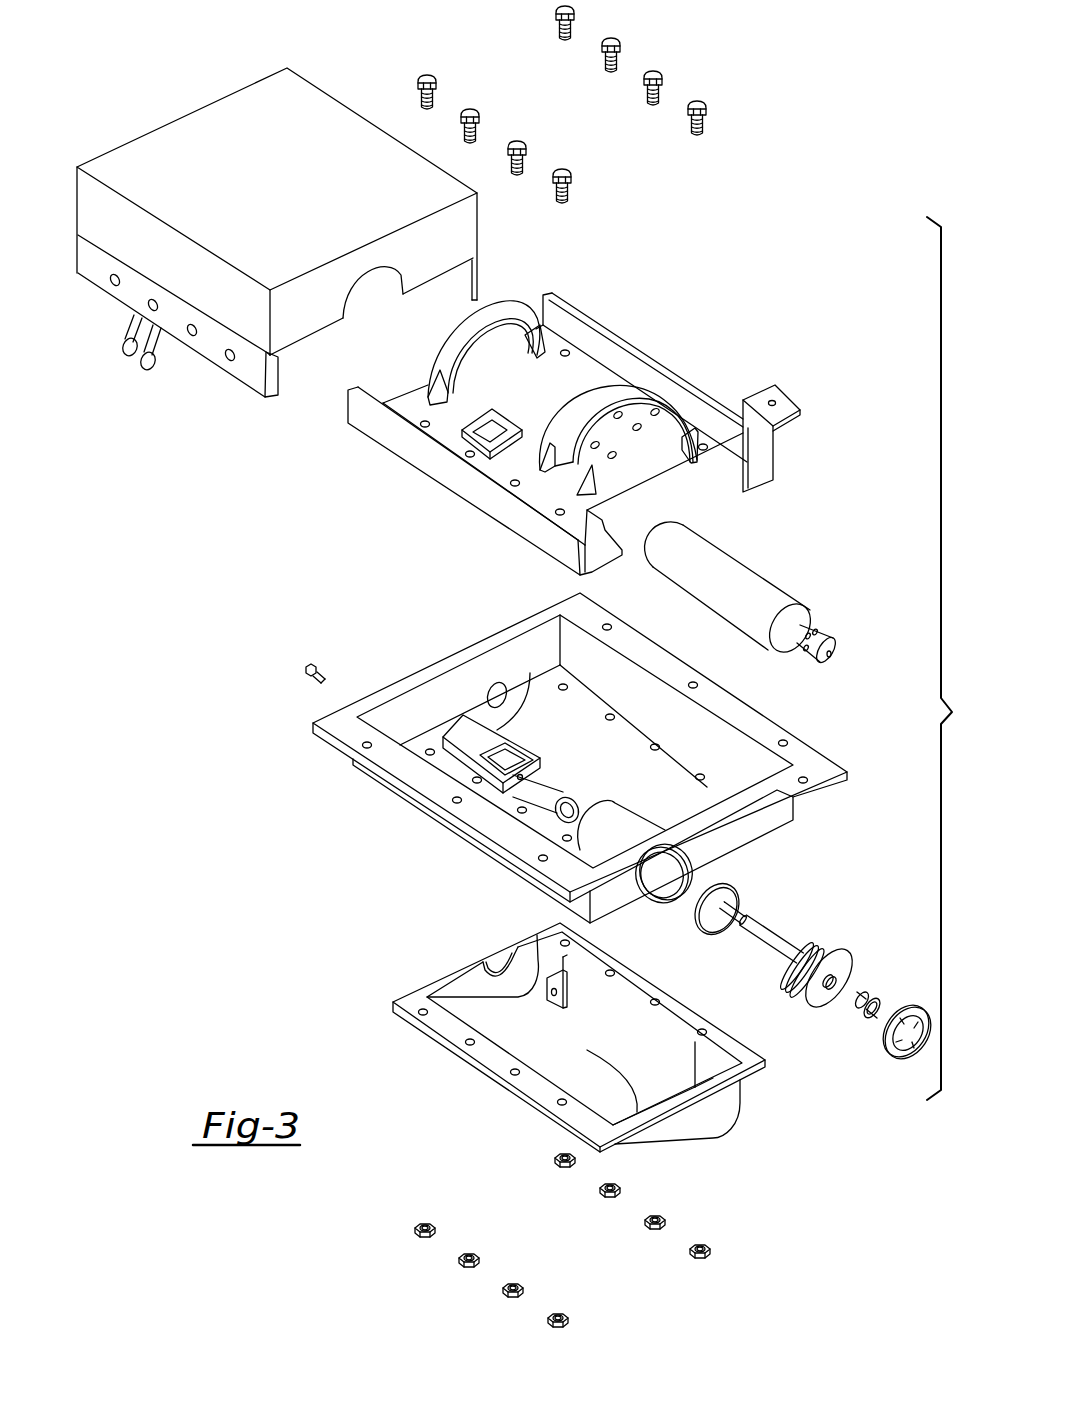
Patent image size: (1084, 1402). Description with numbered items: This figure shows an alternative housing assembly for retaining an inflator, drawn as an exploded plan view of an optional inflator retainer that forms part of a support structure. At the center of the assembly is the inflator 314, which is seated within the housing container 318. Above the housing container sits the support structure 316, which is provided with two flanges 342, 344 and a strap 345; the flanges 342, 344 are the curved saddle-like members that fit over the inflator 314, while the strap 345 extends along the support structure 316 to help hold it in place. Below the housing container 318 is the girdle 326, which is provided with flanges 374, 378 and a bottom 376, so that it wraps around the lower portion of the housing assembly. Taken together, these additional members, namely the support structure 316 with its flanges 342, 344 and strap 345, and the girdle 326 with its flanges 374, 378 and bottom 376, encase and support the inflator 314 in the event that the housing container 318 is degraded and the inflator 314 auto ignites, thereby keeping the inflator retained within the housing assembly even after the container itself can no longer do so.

The inflator 314 is at (722, 570).
The support structure 316 is at (422, 458).
The housing container 318 is at (808, 758).
The girdle 326 is at (622, 1011).
The flange 342 is at (680, 437).
The flange 344 is at (541, 331).
The strap 345 is at (618, 382).
The flange 374 is at (528, 950).
The bottom 376 is at (517, 990).
The flange 378 is at (730, 1100).